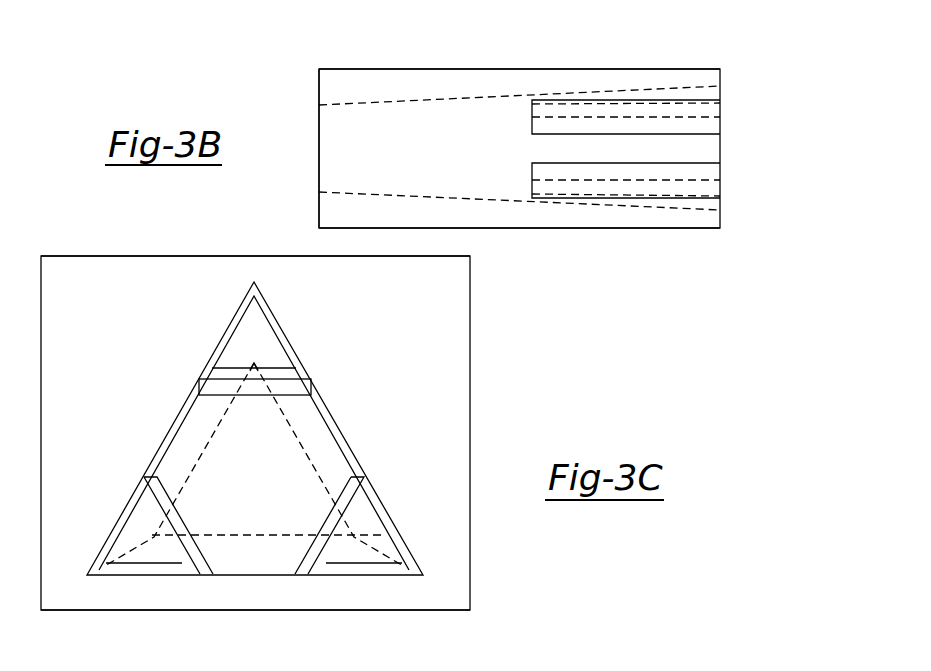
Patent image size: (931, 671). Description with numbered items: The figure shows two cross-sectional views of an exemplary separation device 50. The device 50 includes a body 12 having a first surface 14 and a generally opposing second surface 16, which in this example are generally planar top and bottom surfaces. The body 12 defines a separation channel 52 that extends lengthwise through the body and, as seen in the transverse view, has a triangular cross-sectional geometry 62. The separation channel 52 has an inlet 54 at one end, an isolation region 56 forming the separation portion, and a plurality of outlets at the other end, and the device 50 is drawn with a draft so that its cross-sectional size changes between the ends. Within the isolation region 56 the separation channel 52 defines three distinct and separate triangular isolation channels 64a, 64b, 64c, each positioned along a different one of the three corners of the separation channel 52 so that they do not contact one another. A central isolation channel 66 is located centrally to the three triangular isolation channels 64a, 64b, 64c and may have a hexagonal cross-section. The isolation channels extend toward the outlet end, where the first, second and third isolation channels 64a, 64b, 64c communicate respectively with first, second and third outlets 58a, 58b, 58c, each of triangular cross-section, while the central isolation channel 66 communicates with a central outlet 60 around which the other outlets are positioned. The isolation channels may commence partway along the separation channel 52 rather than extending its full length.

In FIG. 3B, the body 12 is at (333, 80).
In FIG. 3C, the body 12 is at (480, 300).
In FIG. 3B, the first surface 14 is at (366, 66).
In FIG. 3C, the first surface 14 is at (138, 254).
In FIG. 3B, the second surface 16 is at (652, 231).
In FIG. 3C, the second surface 16 is at (455, 614).
In FIG. 3B, the separation device 50 is at (259, 103).
In FIG. 3C, the separation device 50 is at (490, 386).
In FIG. 3B, the separation channel 52 is at (403, 100).
In FIG. 3C, the separation channel 52 is at (303, 440).
In FIG. 3B, the inlet 54 is at (318, 162).
In FIG. 3B, the isolation region 56 is at (452, 128).
In FIG. 3B, the first outlet 58a is at (722, 113).
In FIG. 3C, the first outlet 58a is at (260, 354).
In FIG. 3C, the second outlet 58b is at (370, 540).
In FIG. 3B, the third outlet 58c is at (722, 182).
In FIG. 3C, the third outlet 58c is at (160, 537).
In FIG. 3B, the central outlet 60 is at (722, 152).
In FIG. 3C, the central outlet 60 is at (289, 489).
In FIG. 3C, the triangular cross-sectional geometry 62 is at (250, 575).
In FIG. 3B, the first isolation channel 64a is at (598, 103).
In FIG. 3C, the first isolation channel 64a is at (227, 333).
In FIG. 3C, the second isolation channel 64b is at (393, 517).
In FIG. 3B, the third isolation channel 64c is at (598, 190).
In FIG. 3C, the third isolation channel 64c is at (112, 530).
In FIG. 3B, the central isolation channel 66 is at (547, 148).
In FIG. 3C, the central isolation channel 66 is at (237, 443).